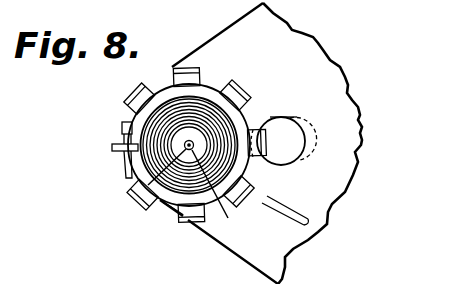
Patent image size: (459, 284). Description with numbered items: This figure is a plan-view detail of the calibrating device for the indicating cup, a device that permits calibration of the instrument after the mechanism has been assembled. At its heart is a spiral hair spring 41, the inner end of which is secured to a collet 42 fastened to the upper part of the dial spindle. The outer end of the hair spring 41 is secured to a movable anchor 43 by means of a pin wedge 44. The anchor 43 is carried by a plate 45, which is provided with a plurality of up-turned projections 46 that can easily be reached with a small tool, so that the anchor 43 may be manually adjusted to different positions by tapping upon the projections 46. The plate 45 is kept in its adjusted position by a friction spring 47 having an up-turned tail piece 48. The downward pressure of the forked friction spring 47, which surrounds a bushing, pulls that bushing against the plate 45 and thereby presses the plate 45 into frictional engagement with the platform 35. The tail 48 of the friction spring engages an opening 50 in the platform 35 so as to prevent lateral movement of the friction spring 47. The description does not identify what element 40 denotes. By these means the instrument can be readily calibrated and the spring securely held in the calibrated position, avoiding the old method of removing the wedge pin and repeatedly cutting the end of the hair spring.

The platform 35 is at (372, 117).
The pawl lever 40 is at (207, 196).
The spiral hair spring 41 is at (163, 203).
The collet 42 is at (134, 198).
The movable anchor 43 is at (112, 151).
The pin wedge 44 is at (121, 126).
The plate 45 is at (209, 91).
The projections 46 is at (243, 85).
The friction spring 47 is at (130, 184).
The up-turned tail piece 48 is at (282, 150).
The opening 50 is at (283, 117).